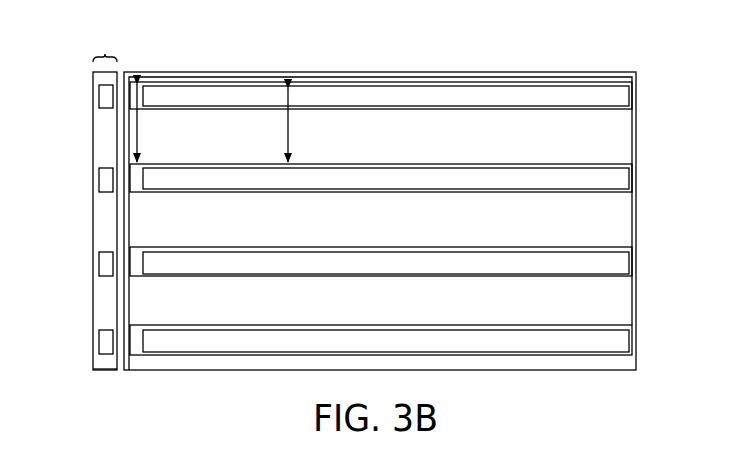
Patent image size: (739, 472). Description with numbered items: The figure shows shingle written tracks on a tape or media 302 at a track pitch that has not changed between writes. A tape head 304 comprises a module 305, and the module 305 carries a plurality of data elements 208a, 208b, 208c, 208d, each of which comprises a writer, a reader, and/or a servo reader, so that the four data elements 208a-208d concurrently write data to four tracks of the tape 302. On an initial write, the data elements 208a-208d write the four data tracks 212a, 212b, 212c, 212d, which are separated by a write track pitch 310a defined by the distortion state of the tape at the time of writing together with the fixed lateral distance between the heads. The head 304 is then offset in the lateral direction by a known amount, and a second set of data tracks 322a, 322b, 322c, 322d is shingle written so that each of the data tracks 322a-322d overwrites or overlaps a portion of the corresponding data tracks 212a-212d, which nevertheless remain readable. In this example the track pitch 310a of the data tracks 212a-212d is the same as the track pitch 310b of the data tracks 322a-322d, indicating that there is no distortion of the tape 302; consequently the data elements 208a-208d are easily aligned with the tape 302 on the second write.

The tape or media 302 is at (470, 68).
The tape head 304 is at (107, 197).
The module 305 is at (102, 383).
The data element 208a is at (103, 96).
The data element 208b is at (103, 179).
The data element 208c is at (103, 262).
The data element 208d is at (103, 340).
The data track 212a is at (614, 80).
The data track 212b is at (614, 162).
The data track 212c is at (614, 245).
The data track 212d is at (614, 323).
The data track 322a is at (448, 97).
The data track 322b is at (448, 178).
The data track 322c is at (448, 262).
The data track 322d is at (375, 343).
The write track pitch 310a is at (140, 128).
The track pitch 310b is at (290, 133).